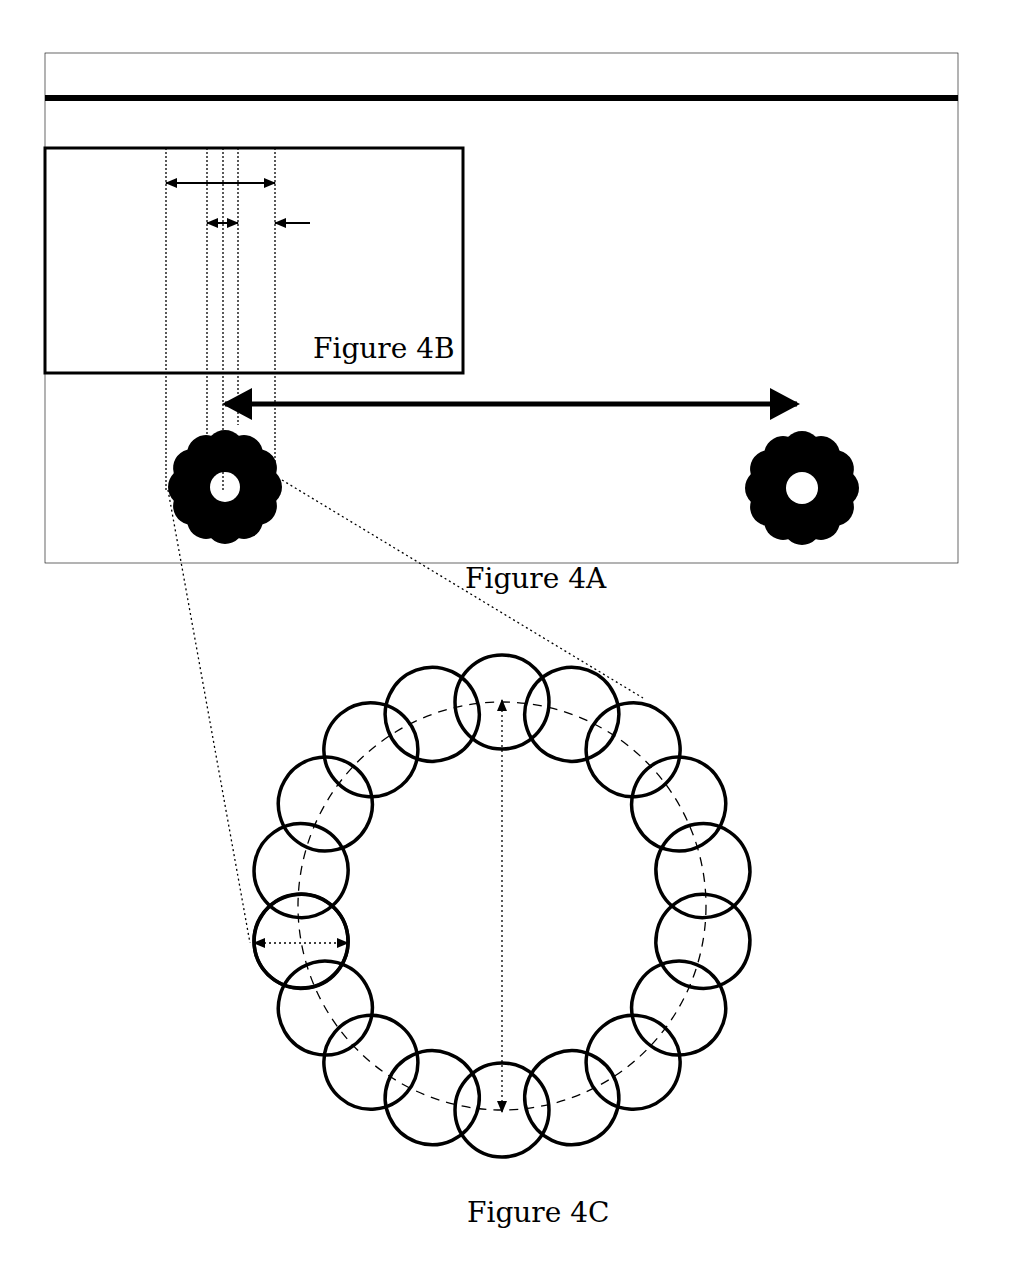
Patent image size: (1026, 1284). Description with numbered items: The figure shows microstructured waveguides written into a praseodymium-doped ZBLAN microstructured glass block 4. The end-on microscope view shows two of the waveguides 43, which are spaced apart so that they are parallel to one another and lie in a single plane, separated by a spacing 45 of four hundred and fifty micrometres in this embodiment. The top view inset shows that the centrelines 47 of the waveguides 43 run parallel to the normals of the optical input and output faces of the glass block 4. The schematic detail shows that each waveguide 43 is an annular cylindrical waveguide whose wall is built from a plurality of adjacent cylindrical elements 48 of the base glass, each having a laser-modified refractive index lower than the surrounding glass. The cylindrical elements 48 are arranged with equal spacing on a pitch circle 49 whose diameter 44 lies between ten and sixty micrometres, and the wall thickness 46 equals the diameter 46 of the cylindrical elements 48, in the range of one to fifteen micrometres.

In FIG. 4A, the microstructured glass block 4 is at (512, 88).
In FIG. 4A, the waveguide 43 is at (163, 490).
In FIG. 4C, the waveguide 43 is at (715, 1079).
In FIG. 4B, the diameter 44 is at (222, 178).
In FIG. 4C, the diameter 44 is at (498, 958).
In FIG. 4A, the spacing 45 is at (548, 392).
In FIG. 4B, the wall thickness 46 is at (293, 216).
In FIG. 4C, the wall thickness 46 is at (280, 951).
In FIG. 4B, the centreline 47 is at (220, 317).
In FIG. 4C, the cylindrical element 48 is at (250, 943).
In FIG. 4C, the pitch circle 49 is at (332, 808).